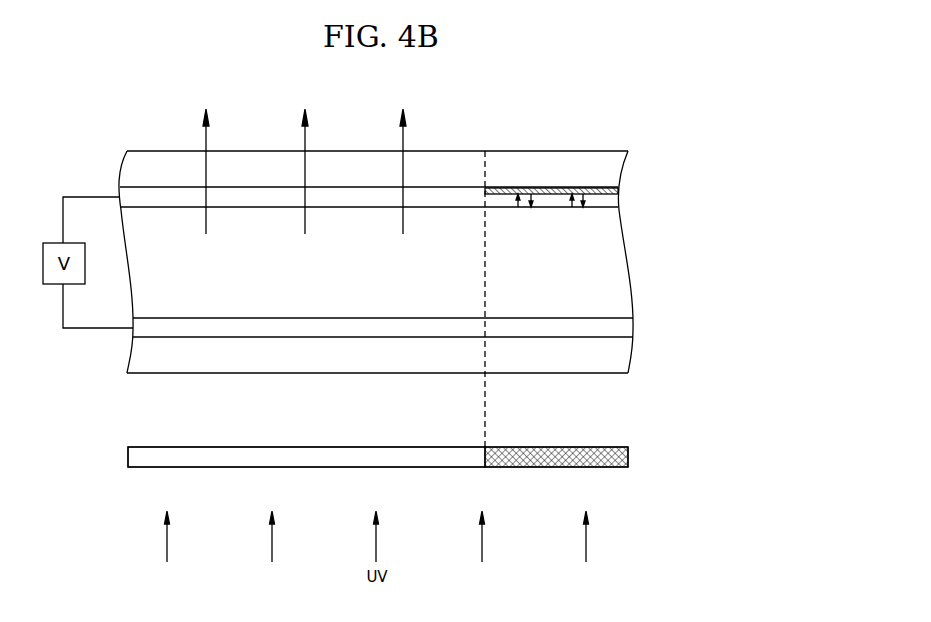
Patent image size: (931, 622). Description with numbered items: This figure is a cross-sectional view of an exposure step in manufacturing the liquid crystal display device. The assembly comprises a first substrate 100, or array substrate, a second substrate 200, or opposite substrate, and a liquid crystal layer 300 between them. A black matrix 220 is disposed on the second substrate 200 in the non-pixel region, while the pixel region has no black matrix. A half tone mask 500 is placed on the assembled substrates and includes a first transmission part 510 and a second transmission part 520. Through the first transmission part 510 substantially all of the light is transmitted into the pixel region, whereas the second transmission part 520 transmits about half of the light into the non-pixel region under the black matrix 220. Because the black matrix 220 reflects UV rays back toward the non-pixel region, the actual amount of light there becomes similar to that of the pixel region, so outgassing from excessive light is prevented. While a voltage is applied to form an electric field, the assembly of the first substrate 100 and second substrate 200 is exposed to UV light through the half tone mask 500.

The first substrate 100 is at (649, 359).
The second substrate 200 is at (641, 190).
The black matrix 220 is at (554, 187).
The liquid crystal layer 300 is at (323, 276).
The half tone mask 500 is at (431, 426).
The first transmission part 510 is at (311, 447).
The second transmission part 520 is at (549, 447).